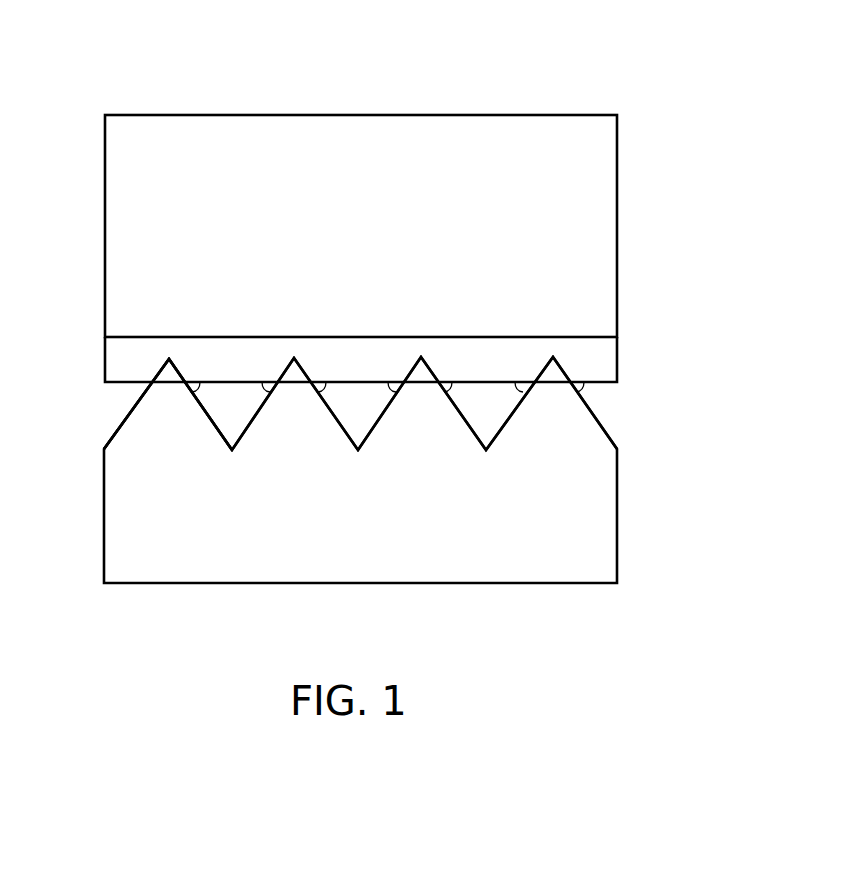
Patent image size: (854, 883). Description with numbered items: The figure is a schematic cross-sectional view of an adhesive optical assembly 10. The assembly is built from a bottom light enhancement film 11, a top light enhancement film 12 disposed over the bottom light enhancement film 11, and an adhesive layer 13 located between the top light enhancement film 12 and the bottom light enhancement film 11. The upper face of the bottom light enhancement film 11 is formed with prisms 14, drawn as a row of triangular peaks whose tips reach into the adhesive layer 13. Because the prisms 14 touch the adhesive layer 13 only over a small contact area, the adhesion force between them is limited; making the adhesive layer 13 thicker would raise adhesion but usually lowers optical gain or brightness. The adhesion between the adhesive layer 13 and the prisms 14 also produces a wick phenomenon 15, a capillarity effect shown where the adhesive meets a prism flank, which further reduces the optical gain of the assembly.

The adhesive optical assembly 10 is at (698, 49).
The bottom light enhancement film 11 is at (590, 537).
The top light enhancement film 12 is at (576, 251).
The adhesive layer 13 is at (602, 367).
The prisms 14 is at (605, 432).
The wick phenomenon 15 is at (143, 392).